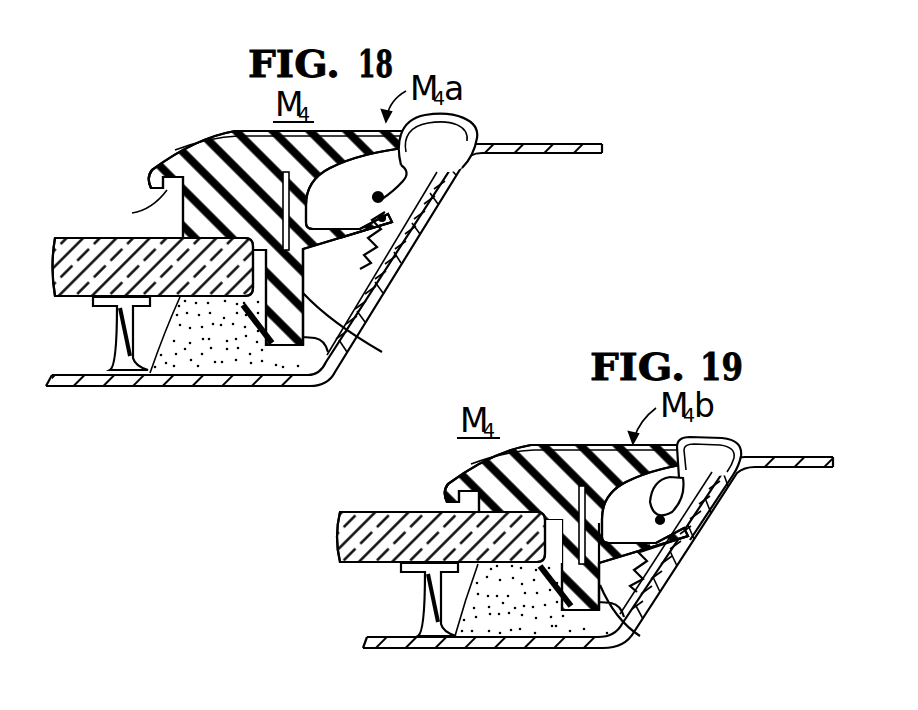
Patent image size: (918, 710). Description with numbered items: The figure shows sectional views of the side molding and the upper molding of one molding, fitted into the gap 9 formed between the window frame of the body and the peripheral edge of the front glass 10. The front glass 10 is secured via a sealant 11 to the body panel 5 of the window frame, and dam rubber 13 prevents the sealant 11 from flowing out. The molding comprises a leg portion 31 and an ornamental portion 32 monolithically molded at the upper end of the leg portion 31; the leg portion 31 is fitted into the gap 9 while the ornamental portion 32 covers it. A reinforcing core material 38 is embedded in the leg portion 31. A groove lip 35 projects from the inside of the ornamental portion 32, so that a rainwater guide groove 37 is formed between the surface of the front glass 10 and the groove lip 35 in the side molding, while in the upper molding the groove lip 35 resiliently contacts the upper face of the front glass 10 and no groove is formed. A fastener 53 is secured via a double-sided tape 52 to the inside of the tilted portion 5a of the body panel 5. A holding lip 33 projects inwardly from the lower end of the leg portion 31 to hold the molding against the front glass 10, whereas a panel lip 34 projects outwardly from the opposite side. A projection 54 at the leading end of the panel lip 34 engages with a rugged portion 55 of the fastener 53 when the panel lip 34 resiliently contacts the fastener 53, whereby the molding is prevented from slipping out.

In FIG. 18, the body panel 5 is at (568, 151).
In FIG. 19, the body panel 5 is at (794, 467).
In FIG. 18, the tilted portion 5a is at (392, 279).
In FIG. 19, the tilted portion 5a is at (658, 602).
In FIG. 18, the gap 9 is at (337, 307).
In FIG. 18, the front glass 10 is at (74, 297).
In FIG. 19, the front glass 10 is at (367, 563).
In FIG. 18, the sealant 11 is at (181, 348).
In FIG. 19, the sealant 11 is at (497, 624).
In FIG. 18, the dam rubber 13 is at (117, 352).
In FIG. 19, the dam rubber 13 is at (427, 632).
In FIG. 18, the leg portion 31 is at (350, 340).
In FIG. 19, the leg portion 31 is at (620, 626).
In FIG. 18, the ornamental portion 32 is at (231, 140).
In FIG. 19, the ornamental portion 32 is at (568, 462).
In FIG. 18, the holding lip 33 is at (247, 310).
In FIG. 19, the holding lip 33 is at (542, 610).
In FIG. 18, the panel lip 34 is at (343, 226).
In FIG. 19, the panel lip 34 is at (645, 545).
In FIG. 18, the groove lip 35 is at (149, 179).
In FIG. 19, the groove lip 35 is at (446, 492).
In FIG. 18, the rainwater guide groove 37 is at (132, 209).
In FIG. 18, the reinforcing core material 38 is at (290, 193).
In FIG. 18, the double-sided tape 52 is at (420, 205).
In FIG. 19, the double-sided tape 52 is at (693, 517).
In FIG. 18, the fastener 53 is at (412, 172).
In FIG. 19, the fastener 53 is at (700, 478).
In FIG. 18, the projection 54 is at (405, 225).
In FIG. 19, the projection 54 is at (672, 545).
In FIG. 18, the rugged portion 55 is at (402, 163).
In FIG. 19, the rugged portion 55 is at (700, 470).